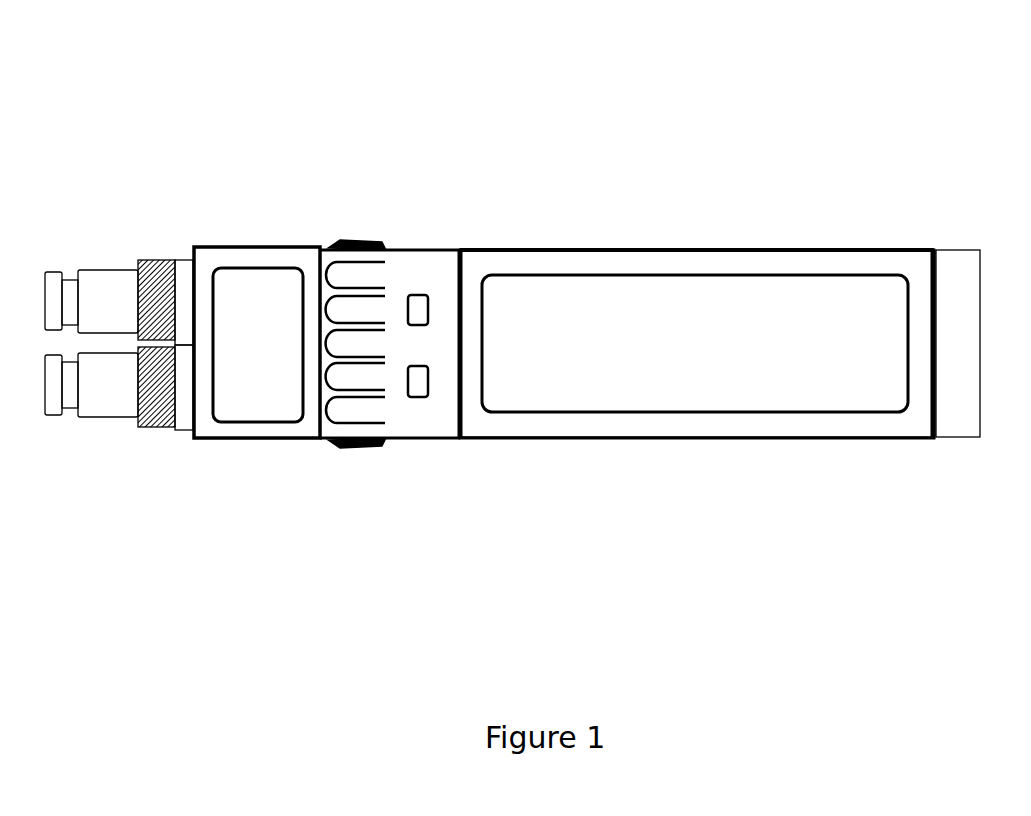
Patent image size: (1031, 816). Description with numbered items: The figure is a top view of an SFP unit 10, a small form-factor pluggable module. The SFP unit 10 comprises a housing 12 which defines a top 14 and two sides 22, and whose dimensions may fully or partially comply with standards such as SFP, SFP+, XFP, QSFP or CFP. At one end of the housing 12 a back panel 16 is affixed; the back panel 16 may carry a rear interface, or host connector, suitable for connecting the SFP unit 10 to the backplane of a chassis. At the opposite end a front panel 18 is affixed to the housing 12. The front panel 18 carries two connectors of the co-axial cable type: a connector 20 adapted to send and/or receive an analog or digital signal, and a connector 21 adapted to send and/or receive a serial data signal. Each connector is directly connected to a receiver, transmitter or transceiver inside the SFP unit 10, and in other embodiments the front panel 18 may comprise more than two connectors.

The SFP unit 10 is at (590, 36).
The housing 12 is at (826, 306).
The top 14 is at (631, 376).
The back panel 16 is at (980, 281).
The front panel 18 is at (198, 430).
The connector 20 is at (122, 317).
The connector 21 is at (122, 401).
The sides 22 is at (657, 249).